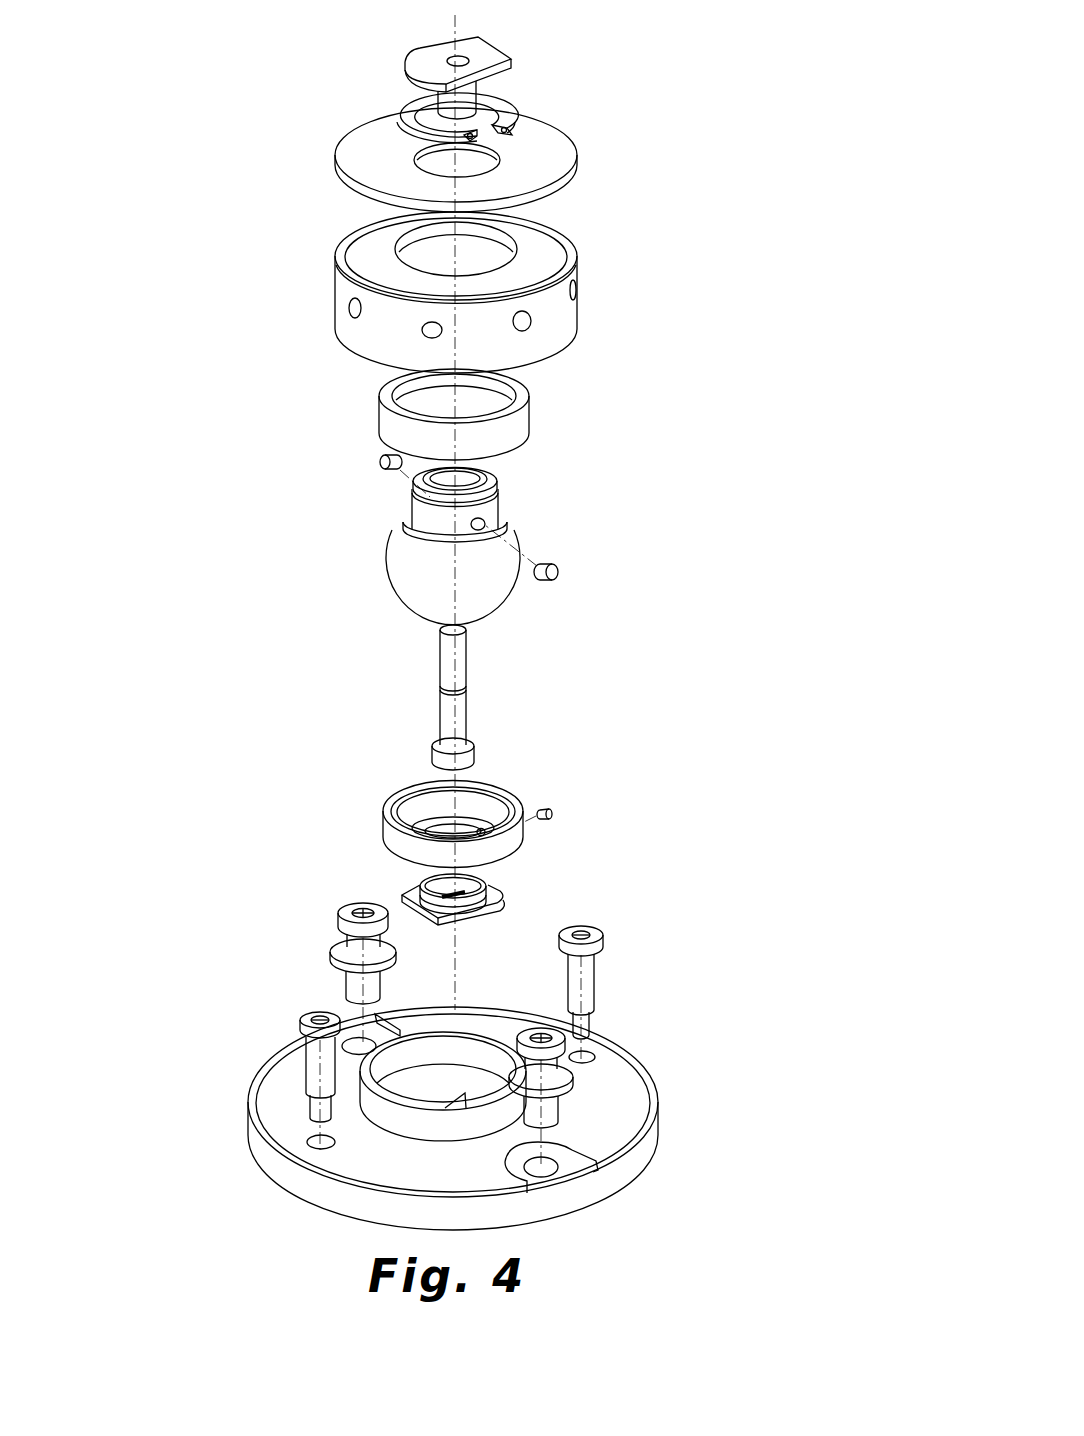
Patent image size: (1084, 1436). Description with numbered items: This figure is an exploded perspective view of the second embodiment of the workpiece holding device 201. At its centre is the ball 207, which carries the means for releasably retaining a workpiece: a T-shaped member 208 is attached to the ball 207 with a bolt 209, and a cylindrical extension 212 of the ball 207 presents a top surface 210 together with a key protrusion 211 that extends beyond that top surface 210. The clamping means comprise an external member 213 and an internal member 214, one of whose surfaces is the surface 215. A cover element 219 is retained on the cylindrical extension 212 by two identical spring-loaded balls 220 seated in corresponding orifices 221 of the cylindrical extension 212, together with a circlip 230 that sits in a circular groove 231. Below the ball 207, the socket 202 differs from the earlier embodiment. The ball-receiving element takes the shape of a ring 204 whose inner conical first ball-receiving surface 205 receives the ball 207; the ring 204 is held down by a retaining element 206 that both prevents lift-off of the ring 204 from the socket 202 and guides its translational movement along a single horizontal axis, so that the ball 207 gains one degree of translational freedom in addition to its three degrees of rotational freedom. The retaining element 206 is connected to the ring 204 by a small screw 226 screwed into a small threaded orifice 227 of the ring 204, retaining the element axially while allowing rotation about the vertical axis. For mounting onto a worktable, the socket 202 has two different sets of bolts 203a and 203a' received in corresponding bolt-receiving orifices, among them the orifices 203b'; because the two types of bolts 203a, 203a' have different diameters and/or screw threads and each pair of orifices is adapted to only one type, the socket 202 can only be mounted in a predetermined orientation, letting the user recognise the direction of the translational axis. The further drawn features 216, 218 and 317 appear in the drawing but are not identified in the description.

The workpiece holding device 201 is at (333, 70).
The socket 202 is at (674, 788).
The bolts 203a is at (264, 974).
The bolts 203a' is at (230, 1064).
The bolt-receiving orifices 203b' is at (434, 1209).
The ring 204 is at (380, 837).
The inner conical first ball-receiving surface 205 is at (417, 813).
The retaining element 206 is at (412, 895).
The ball 207 is at (488, 578).
The T-shaped member 208 is at (490, 45).
The bolt 209 is at (457, 737).
The top surface 210 is at (495, 481).
The key protrusion 211 is at (490, 473).
The cylindrical extension 212 is at (425, 522).
The external member 213 is at (382, 353).
The internal member 214 is at (379, 430).
The surface 215 is at (379, 404).
The bore 216 is at (410, 250).
The side hole 218 is at (348, 305).
The cover element 219 is at (380, 185).
The spring-loaded balls 220 is at (558, 573).
The orifices 221 is at (487, 522).
The small screw 226 is at (552, 808).
The small threaded orifice 227 is at (483, 825).
The circlip 230 is at (515, 107).
The circular groove 231 is at (412, 491).
The central boss ring 317 is at (398, 1123).